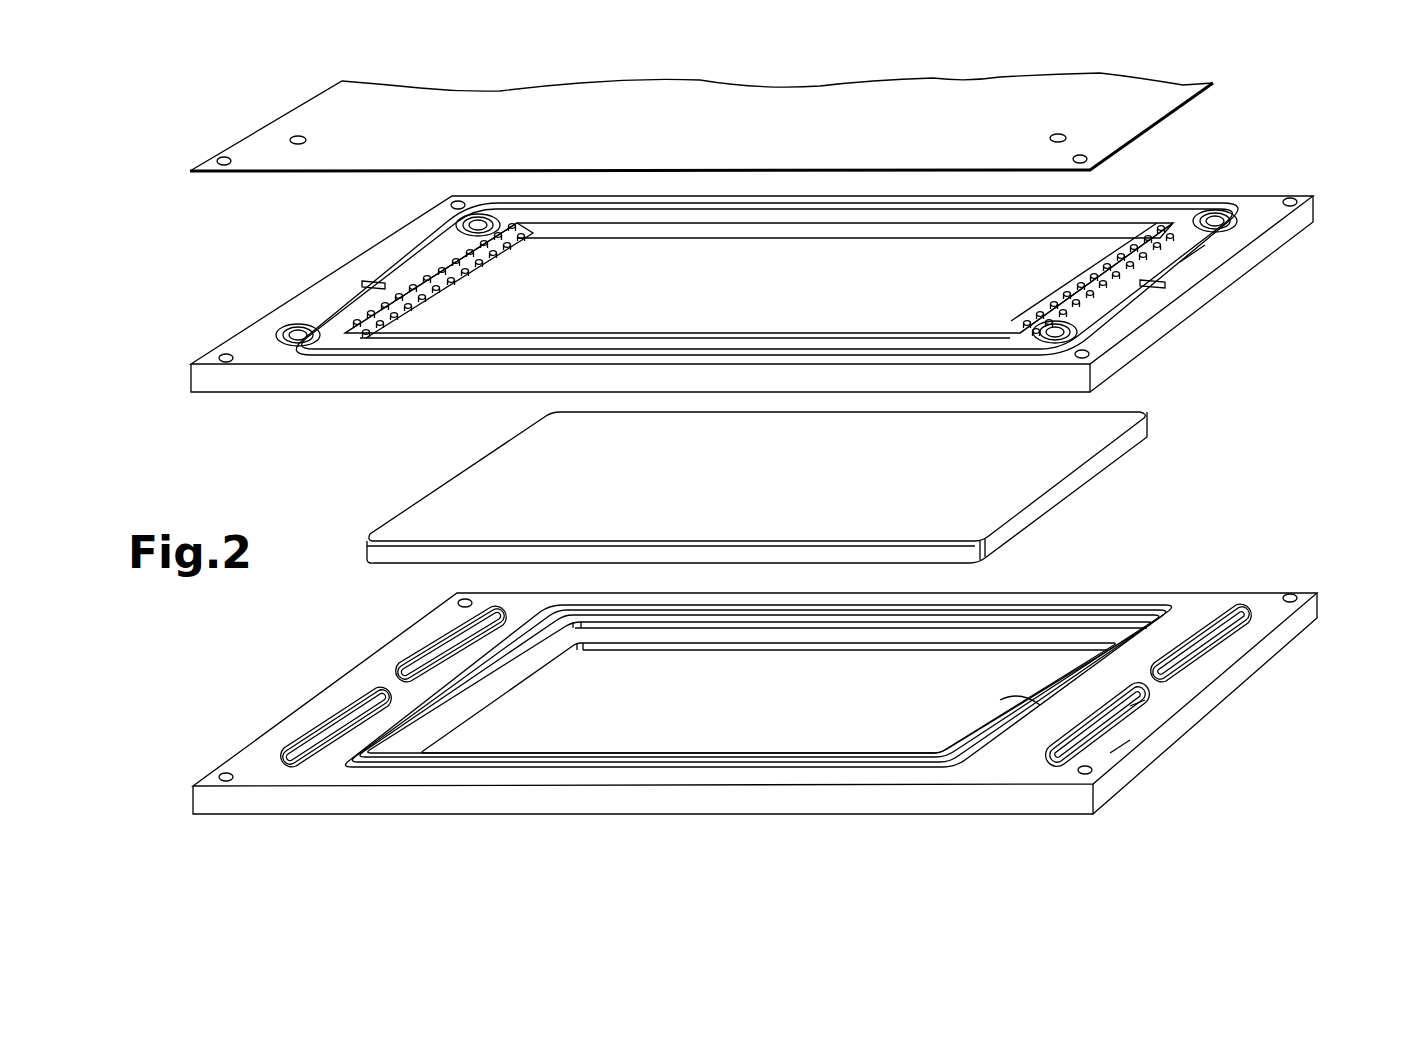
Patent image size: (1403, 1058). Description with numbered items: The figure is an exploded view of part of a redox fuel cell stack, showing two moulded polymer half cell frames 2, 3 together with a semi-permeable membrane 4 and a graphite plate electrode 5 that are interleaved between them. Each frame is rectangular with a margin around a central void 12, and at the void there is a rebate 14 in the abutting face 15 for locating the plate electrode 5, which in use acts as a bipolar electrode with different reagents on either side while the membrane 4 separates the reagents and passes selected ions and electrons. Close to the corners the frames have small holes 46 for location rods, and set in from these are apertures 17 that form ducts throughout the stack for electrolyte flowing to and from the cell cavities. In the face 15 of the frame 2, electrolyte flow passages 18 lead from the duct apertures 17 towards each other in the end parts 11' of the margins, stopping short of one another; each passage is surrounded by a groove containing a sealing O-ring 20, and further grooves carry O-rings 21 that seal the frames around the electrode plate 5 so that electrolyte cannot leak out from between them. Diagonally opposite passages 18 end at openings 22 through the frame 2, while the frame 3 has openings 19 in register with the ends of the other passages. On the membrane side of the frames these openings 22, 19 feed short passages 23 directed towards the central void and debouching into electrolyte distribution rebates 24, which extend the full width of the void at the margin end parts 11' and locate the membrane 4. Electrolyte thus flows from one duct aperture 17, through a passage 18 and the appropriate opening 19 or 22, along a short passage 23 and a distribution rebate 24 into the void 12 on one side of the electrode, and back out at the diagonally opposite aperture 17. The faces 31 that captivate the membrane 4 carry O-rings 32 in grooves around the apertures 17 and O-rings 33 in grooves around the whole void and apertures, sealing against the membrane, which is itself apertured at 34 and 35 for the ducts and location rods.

The half cell frame 2 is at (330, 700).
The half cell frame 3 is at (250, 388).
The semi-permeable membrane 4 is at (340, 172).
The graphite plate electrode 5 is at (517, 493).
The end part of margin 11' is at (1206, 525).
The central void 12 is at (740, 724).
The rebate 14 is at (1040, 705).
The abutting face 15 is at (1072, 776).
The aperture 17 is at (285, 755).
The electrolyte flow passage 18 is at (1173, 671).
The opening 19 is at (364, 285).
The sealing O-ring 20 is at (1240, 633).
The O-ring 21 is at (1117, 600).
The opening 22 is at (407, 665).
The short passage 23 is at (378, 272).
The electrolyte distribution rebate 24 is at (372, 258).
The face 31 is at (232, 352).
The O-ring 32 is at (1218, 216).
The O-ring 33 is at (1223, 248).
The membrane aperture 34 is at (296, 136).
The membrane aperture 35 is at (222, 158).
The small hole 46 is at (458, 601).